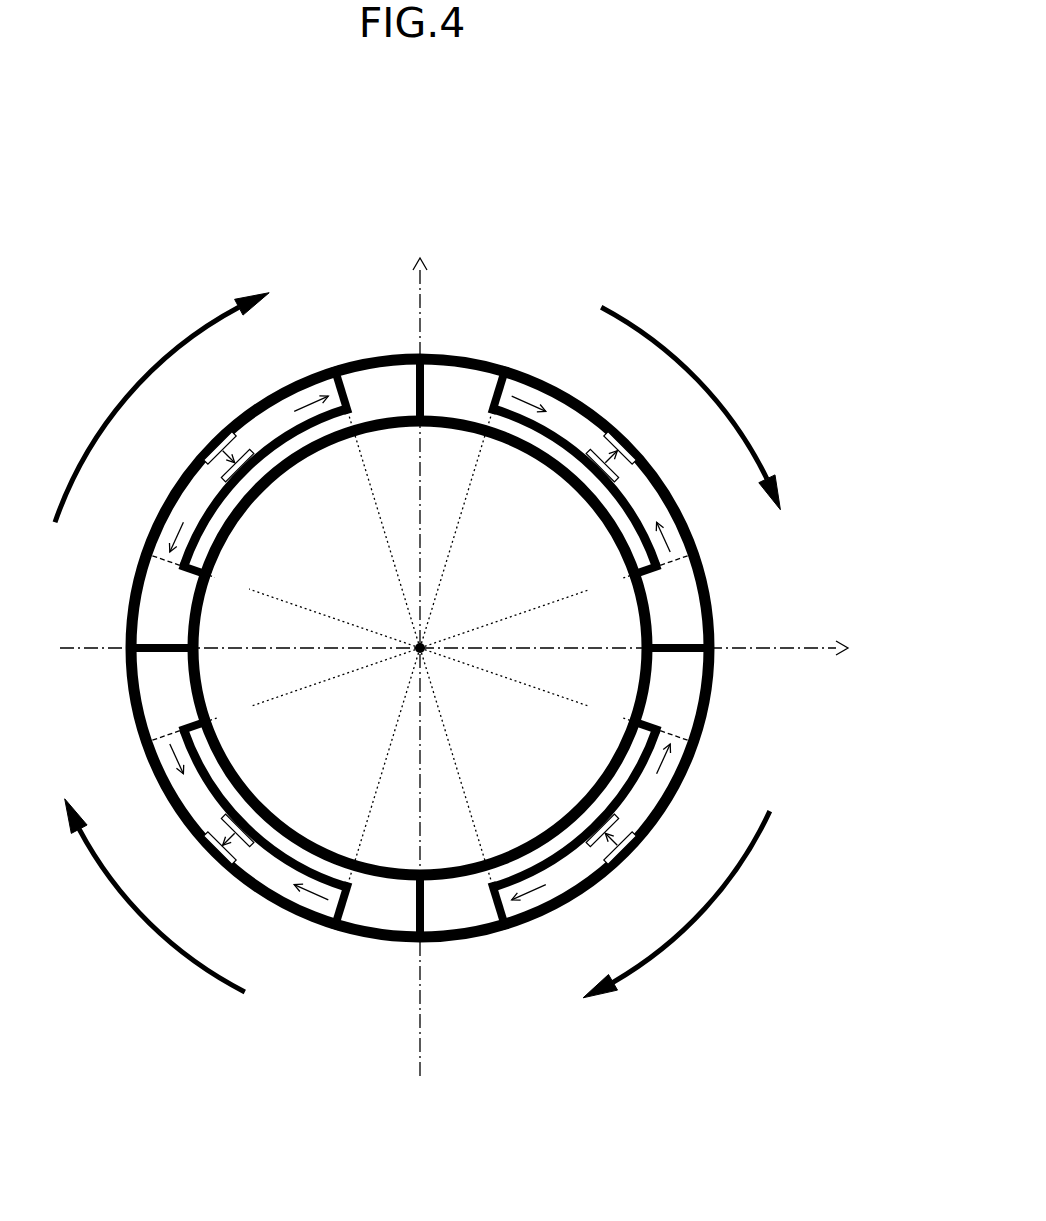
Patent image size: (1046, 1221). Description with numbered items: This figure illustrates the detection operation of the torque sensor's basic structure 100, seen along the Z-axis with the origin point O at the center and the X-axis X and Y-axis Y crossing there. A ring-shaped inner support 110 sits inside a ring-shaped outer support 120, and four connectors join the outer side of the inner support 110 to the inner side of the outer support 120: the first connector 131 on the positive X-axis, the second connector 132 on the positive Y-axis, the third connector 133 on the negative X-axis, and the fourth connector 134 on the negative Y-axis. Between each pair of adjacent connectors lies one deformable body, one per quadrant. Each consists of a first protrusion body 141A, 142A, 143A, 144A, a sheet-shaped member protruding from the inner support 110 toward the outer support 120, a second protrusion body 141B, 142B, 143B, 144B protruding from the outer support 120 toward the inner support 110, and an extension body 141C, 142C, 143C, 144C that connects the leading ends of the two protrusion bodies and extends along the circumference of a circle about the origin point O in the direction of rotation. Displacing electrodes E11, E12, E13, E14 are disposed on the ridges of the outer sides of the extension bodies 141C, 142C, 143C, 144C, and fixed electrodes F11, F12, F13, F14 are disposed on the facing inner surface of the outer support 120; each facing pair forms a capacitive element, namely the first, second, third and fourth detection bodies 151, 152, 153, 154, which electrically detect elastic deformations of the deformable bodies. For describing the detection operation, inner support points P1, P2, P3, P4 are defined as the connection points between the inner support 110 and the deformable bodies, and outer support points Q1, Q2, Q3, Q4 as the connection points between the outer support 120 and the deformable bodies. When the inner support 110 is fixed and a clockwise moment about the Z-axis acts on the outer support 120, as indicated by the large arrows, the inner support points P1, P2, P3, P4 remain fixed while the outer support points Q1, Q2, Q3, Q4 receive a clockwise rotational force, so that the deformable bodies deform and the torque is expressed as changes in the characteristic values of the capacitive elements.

The basic structure 100 is at (585, 243).
The inner support 110 is at (349, 440).
The outer support 120 is at (714, 612).
The first connector 131 is at (685, 652).
The second connector 132 is at (426, 366).
The third connector 133 is at (165, 646).
The fourth connector 134 is at (420, 940).
The first protrusion body 141A is at (652, 580).
The second protrusion body 141B is at (495, 392).
The extension body 141C is at (604, 485).
The first protrusion body 142A is at (182, 578).
The second protrusion body 142B is at (350, 389).
The extension body 142C is at (207, 513).
The first protrusion body 143A is at (190, 722).
The second protrusion body 143B is at (348, 912).
The extension body 143C is at (213, 793).
The first protrusion body 144A is at (655, 720).
The second protrusion body 144B is at (492, 910).
The extension body 144C is at (628, 787).
The first detection body 151 is at (592, 472).
The second detection body 152 is at (238, 478).
The third detection body 153 is at (249, 830).
The fourth detection body 154 is at (603, 824).
The displacing electrode E11 is at (589, 478).
The displacing electrode E12 is at (250, 484).
The displacing electrode E13 is at (250, 820).
The displacing electrode E14 is at (588, 818).
The fixed electrode F11 is at (656, 443).
The fixed electrode F12 is at (179, 446).
The fixed electrode F13 is at (183, 855).
The fixed electrode F14 is at (664, 858).
The inner support point P1 is at (525, 610).
The inner support point P2 is at (315, 611).
The inner support point P3 is at (315, 684).
The inner support point P4 is at (525, 684).
The outer support point Q1 is at (466, 494).
The outer support point Q2 is at (373, 494).
The outer support point Q3 is at (373, 804).
The outer support point Q4 is at (466, 804).
The origin point O is at (409, 660).
The X-axis X is at (467, 648).
The Y-axis Y is at (420, 656).